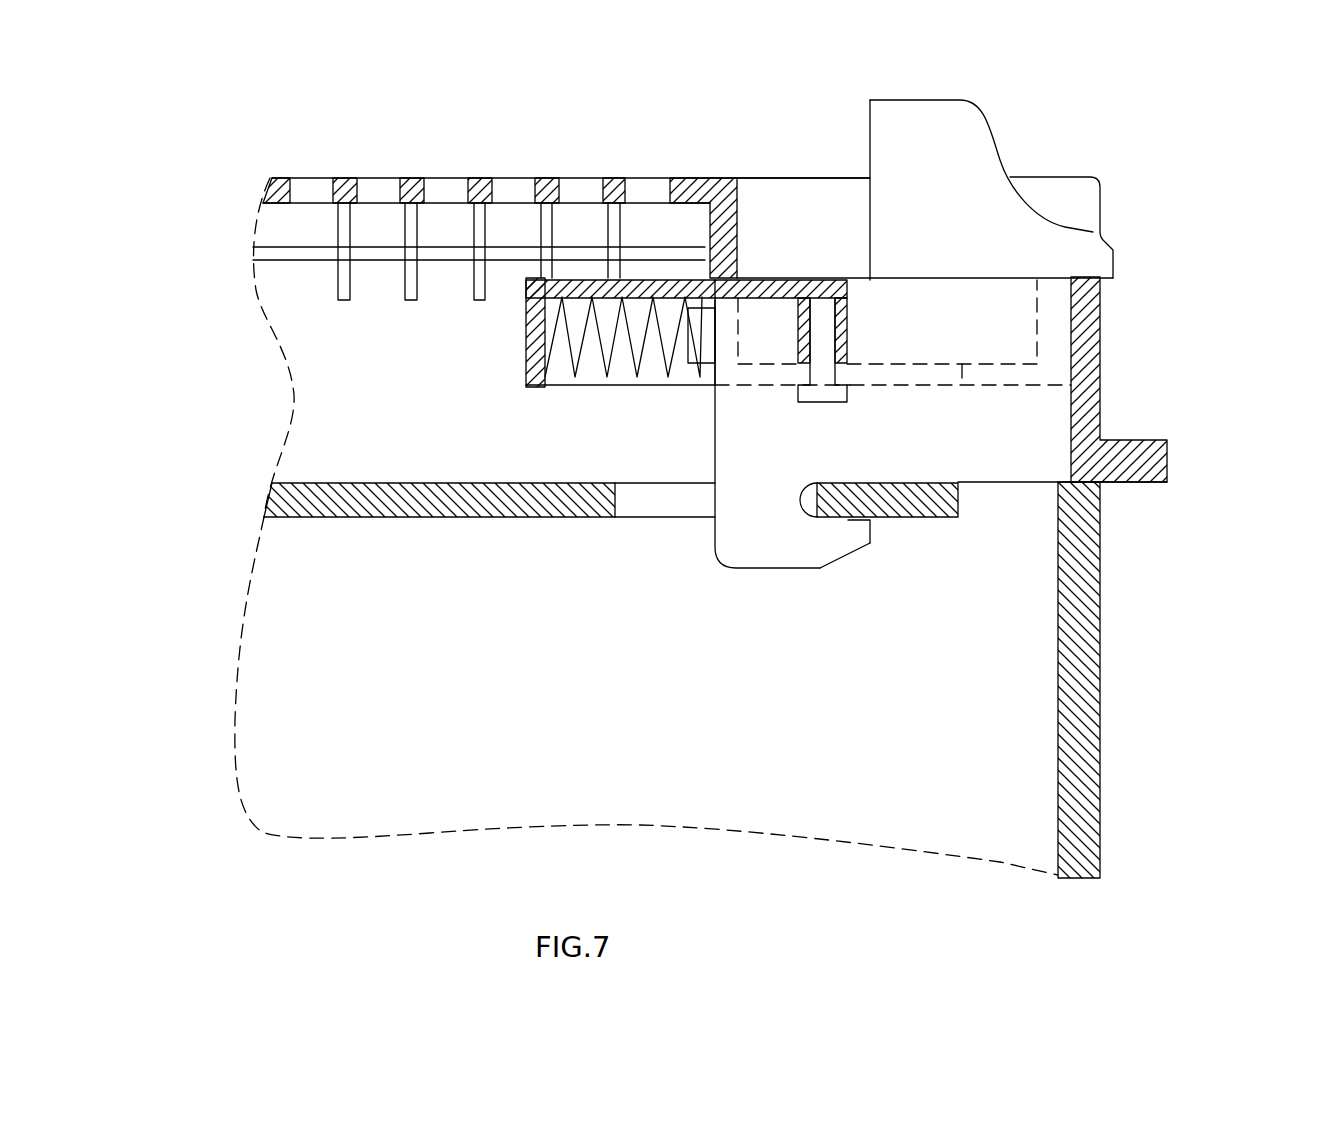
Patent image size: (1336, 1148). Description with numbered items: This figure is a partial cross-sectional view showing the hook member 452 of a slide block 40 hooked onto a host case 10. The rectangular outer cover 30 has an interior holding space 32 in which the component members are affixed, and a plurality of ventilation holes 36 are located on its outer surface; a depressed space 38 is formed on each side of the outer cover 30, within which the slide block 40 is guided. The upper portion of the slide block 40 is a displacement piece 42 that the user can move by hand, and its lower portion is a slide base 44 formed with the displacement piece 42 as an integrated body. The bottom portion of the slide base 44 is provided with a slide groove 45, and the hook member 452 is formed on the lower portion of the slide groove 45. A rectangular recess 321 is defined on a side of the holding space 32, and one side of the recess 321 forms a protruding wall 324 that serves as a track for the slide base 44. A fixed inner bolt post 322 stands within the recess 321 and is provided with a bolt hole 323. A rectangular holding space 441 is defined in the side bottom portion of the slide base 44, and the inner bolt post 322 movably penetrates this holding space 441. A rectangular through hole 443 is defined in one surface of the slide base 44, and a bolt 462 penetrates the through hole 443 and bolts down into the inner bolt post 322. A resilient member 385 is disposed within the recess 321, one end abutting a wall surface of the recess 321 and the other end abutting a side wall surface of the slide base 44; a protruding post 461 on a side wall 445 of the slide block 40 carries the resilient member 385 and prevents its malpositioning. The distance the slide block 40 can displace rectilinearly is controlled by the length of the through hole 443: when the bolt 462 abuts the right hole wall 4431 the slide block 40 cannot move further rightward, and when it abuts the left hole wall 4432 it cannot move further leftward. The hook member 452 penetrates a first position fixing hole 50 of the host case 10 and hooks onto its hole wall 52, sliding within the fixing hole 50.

The host case 10 is at (1088, 620).
The outer cover 30 is at (463, 165).
The holding space 32 is at (308, 363).
The ventilation holes 36 is at (377, 188).
The depressed space 38 is at (767, 200).
The slide block 40 is at (968, 96).
The displacement piece 42 is at (987, 163).
The slide base 44 is at (1052, 412).
The slide groove 45 is at (807, 510).
The first position fixing hole 50 is at (640, 512).
The hole wall 52 is at (855, 525).
The recess 321 is at (657, 380).
The inner bolt post 322 is at (853, 300).
The bolt hole 323 is at (790, 378).
The protruding wall 324 is at (553, 387).
The resilient member 385 is at (602, 363).
The rectangular holding space 441 is at (1025, 318).
The rectangular through hole 443 is at (878, 378).
The side wall 445 is at (718, 337).
The hook member 452 is at (862, 548).
The protruding post 461 is at (702, 310).
The bolt 462 is at (830, 400).
The right hole wall 4431 is at (1020, 450).
The left hole wall 4432 is at (723, 570).